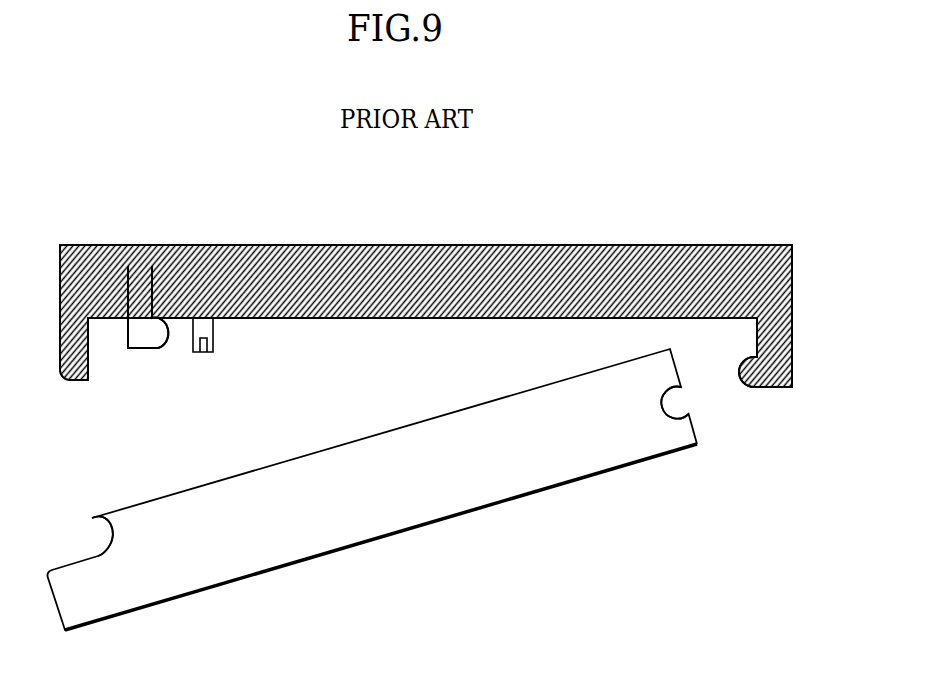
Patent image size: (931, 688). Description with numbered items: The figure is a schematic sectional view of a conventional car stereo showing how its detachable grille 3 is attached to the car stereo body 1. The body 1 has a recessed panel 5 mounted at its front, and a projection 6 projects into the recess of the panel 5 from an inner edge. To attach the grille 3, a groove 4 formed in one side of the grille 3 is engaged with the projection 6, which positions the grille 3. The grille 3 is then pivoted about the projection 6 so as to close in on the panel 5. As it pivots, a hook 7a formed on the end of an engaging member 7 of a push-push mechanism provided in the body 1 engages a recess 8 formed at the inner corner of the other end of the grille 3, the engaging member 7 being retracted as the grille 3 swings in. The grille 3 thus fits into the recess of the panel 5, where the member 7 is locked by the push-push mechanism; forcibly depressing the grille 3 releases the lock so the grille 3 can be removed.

The car stereo body 1 is at (409, 203).
The detachable grille 3 is at (448, 516).
The groove 4 is at (683, 402).
The recessed panel 5 is at (778, 333).
The projection 6 is at (745, 390).
The engaging member 7 is at (147, 279).
The hook 7a is at (163, 345).
The recess 8 is at (95, 530).